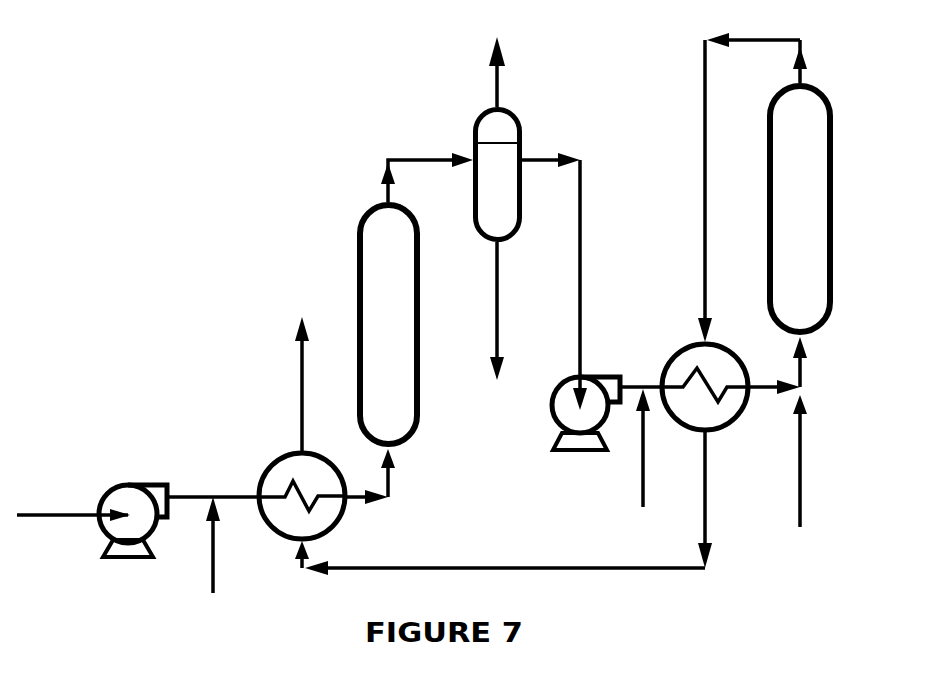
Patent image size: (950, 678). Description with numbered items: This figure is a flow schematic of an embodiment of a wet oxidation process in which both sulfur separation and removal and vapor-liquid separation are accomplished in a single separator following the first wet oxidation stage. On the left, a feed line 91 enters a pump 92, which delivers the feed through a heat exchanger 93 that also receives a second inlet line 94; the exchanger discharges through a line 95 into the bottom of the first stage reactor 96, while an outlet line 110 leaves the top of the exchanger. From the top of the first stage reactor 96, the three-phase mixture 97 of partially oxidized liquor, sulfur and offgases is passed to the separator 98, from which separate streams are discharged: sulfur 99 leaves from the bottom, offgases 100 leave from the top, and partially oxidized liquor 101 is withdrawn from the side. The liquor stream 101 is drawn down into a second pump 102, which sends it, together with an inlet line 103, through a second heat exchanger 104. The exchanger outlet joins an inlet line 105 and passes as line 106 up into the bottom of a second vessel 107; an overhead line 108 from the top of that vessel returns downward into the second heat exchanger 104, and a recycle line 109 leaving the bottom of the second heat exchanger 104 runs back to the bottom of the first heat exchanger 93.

The feed line 91 is at (33, 515).
The pump 92 is at (128, 487).
The heat exchanger 93 is at (292, 452).
The inlet line 94 is at (217, 553).
The line to column 95 is at (393, 473).
The first stage reactor 96 is at (400, 313).
The three-phase mixture 97 is at (405, 157).
The separator 98 is at (507, 128).
The sulfur stream 99 is at (502, 303).
The offgases stream 100 is at (498, 72).
The partially oxidized liquor stream 101 is at (582, 302).
The pump 102 is at (567, 407).
The inlet line 103 is at (643, 472).
The heat exchanger 104 is at (725, 367).
The inlet line 105 is at (803, 473).
The line to column 106 is at (803, 363).
The column 107 is at (808, 107).
The overhead return line 108 is at (707, 70).
The recycle line 109 is at (472, 567).
The outlet line 110 is at (302, 383).